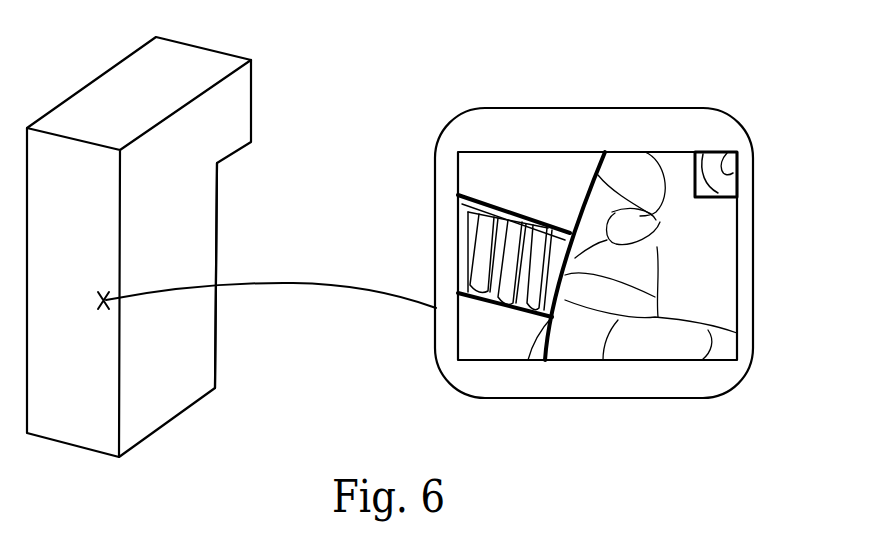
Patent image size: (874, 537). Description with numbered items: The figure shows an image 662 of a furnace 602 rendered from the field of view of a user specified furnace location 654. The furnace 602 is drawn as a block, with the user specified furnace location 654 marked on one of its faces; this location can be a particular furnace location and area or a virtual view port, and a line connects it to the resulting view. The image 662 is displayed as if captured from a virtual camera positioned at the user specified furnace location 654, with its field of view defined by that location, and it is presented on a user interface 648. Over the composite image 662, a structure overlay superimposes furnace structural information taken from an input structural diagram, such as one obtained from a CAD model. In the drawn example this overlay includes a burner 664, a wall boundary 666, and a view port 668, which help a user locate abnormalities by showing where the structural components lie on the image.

The furnace 602 is at (95, 84).
The user specified furnace location 654 is at (108, 285).
The user interface 648 is at (483, 386).
The image 662 is at (523, 150).
The burner 664 is at (470, 194).
The wall boundary 666 is at (604, 198).
The view port 668 is at (738, 165).